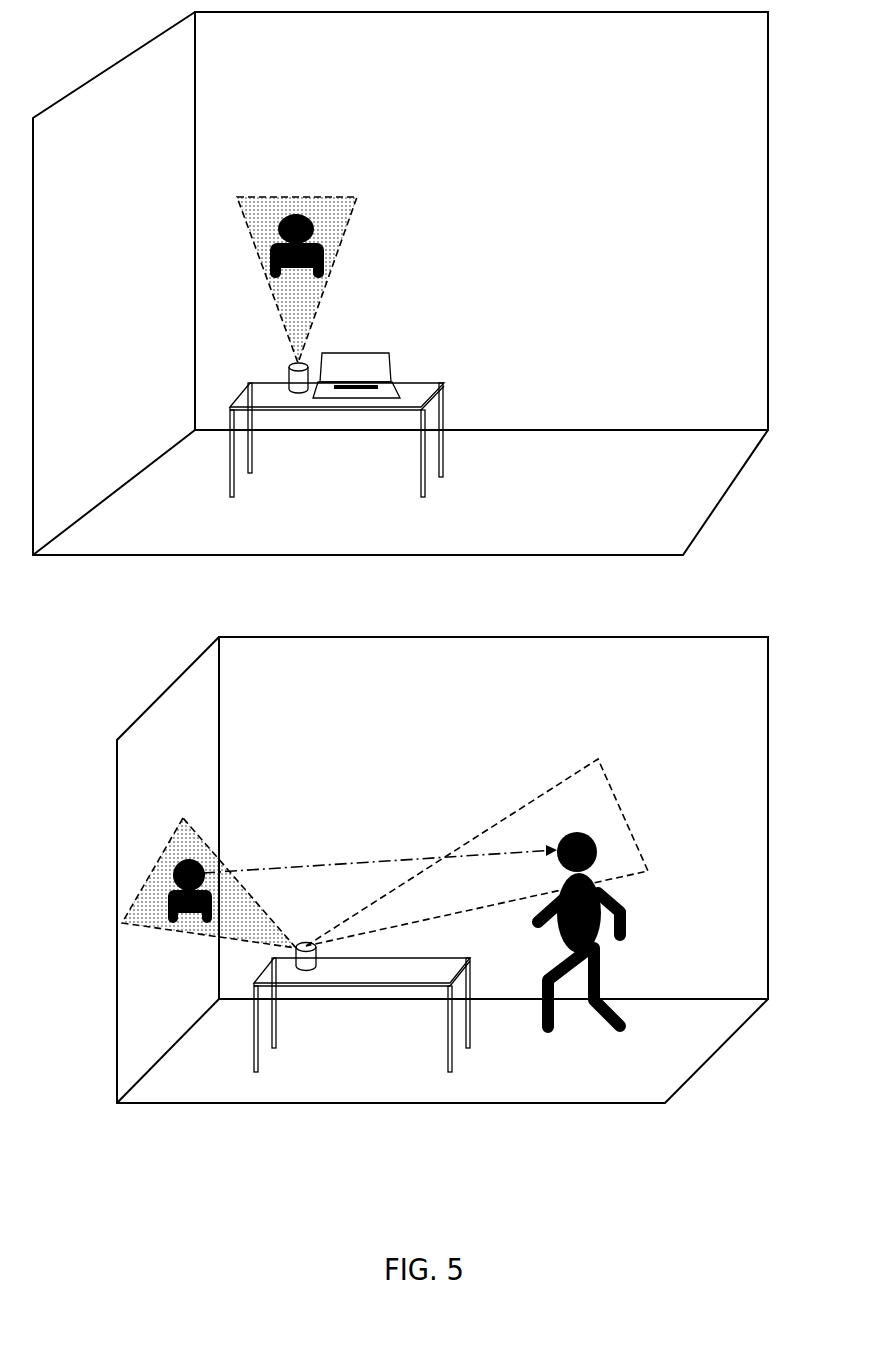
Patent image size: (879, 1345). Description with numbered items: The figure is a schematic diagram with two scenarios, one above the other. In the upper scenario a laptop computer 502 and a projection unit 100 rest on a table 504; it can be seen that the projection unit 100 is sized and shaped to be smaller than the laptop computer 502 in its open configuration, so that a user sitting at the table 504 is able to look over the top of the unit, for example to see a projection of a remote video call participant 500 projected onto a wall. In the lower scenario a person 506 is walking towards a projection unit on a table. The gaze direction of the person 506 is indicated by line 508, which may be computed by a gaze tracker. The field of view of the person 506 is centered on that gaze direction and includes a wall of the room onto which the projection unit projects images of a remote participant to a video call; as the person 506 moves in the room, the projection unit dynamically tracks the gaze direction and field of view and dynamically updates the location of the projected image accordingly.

The projection unit 100 is at (289, 369).
The projected remote user image 500 is at (313, 229).
The laptop computer 502 is at (378, 360).
The table 504 is at (444, 385).
The person 506 is at (598, 1003).
The line 508 is at (328, 866).